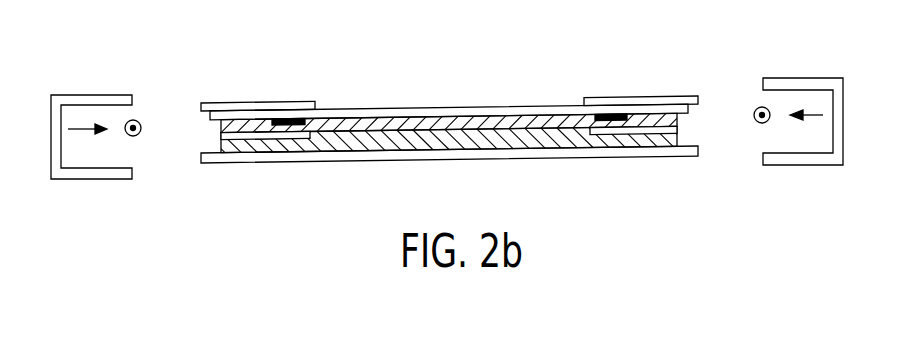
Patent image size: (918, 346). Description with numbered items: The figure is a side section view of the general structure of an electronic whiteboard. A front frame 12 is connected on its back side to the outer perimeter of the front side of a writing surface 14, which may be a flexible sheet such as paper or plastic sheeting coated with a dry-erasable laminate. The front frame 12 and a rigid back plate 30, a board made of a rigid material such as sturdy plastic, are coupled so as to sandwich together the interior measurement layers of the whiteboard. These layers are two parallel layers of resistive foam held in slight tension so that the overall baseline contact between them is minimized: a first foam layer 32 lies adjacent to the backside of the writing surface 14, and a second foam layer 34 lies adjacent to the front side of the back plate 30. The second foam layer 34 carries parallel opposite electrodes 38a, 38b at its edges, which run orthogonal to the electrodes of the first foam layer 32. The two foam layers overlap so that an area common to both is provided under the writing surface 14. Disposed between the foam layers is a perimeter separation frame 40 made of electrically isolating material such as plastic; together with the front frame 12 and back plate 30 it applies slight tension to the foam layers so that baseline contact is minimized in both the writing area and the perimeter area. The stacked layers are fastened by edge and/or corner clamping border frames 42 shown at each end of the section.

The front frame 12 is at (242, 103).
The writing surface 14 is at (523, 109).
The rigid back plate 30 is at (233, 158).
The first foam layer 32 is at (385, 122).
The second foam layer 34 is at (457, 137).
The electrode 38a is at (608, 112).
The electrode 38b is at (290, 119).
The perimeter separation frame 40 is at (221, 137).
The clamping border frame 42 is at (83, 100).